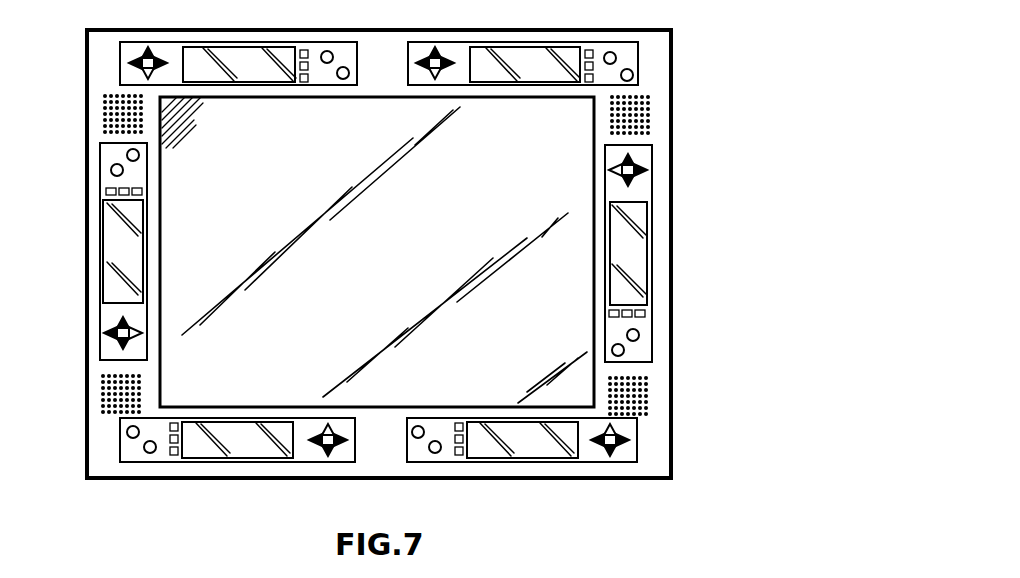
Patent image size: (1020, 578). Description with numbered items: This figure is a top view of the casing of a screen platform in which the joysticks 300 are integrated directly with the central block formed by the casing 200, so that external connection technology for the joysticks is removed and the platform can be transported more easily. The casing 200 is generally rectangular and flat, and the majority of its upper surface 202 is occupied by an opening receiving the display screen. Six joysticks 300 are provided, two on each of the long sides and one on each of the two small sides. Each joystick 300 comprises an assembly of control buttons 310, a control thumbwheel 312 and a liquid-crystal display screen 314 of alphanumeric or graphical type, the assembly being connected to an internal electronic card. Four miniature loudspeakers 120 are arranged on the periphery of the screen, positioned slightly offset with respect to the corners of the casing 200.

The casing 200 is at (212, 28).
The upper surface 202 is at (650, 57).
The miniature loudspeakers 120 is at (102, 103).
The joysticks 300 is at (105, 313).
The control buttons 310 is at (418, 438).
The control thumbwheel 312 is at (462, 455).
The liquid-crystal display screen 314 is at (562, 453).